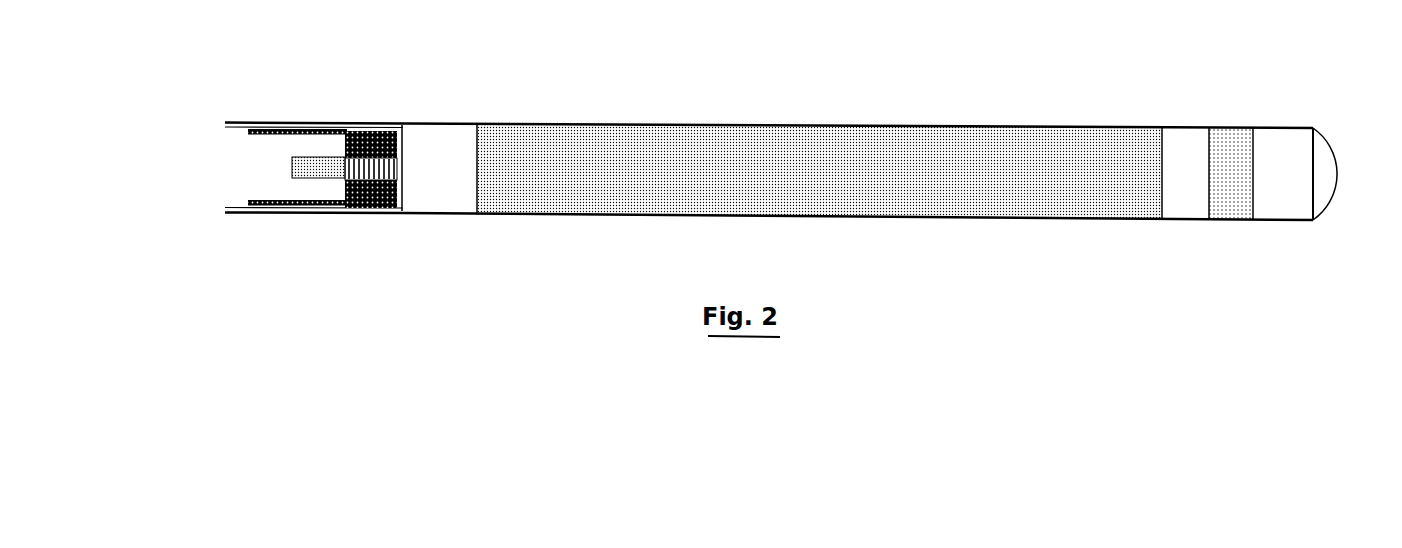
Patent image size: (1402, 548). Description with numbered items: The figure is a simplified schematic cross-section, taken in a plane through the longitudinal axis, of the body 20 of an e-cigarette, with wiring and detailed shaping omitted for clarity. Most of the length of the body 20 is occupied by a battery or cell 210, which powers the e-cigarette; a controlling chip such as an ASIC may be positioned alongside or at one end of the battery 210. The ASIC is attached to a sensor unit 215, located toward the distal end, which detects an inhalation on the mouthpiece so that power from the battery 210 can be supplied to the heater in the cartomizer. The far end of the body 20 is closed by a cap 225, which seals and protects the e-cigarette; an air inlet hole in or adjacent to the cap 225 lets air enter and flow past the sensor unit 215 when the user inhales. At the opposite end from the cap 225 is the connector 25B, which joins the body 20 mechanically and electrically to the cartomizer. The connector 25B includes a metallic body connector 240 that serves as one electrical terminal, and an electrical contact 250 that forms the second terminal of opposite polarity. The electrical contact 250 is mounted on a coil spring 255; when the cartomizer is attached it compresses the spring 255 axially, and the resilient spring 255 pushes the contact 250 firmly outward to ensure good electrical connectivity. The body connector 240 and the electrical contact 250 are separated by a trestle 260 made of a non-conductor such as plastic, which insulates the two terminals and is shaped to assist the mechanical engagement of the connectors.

The body 20 is at (885, 235).
The battery 210 is at (820, 170).
The sensor unit 215 is at (1232, 173).
The cap 225 is at (1322, 175).
The connector 25B is at (315, 120).
The body connector 240 is at (233, 212).
The electrical contact 250 is at (318, 165).
The coil spring 255 is at (360, 195).
The trestle 260 is at (375, 128).